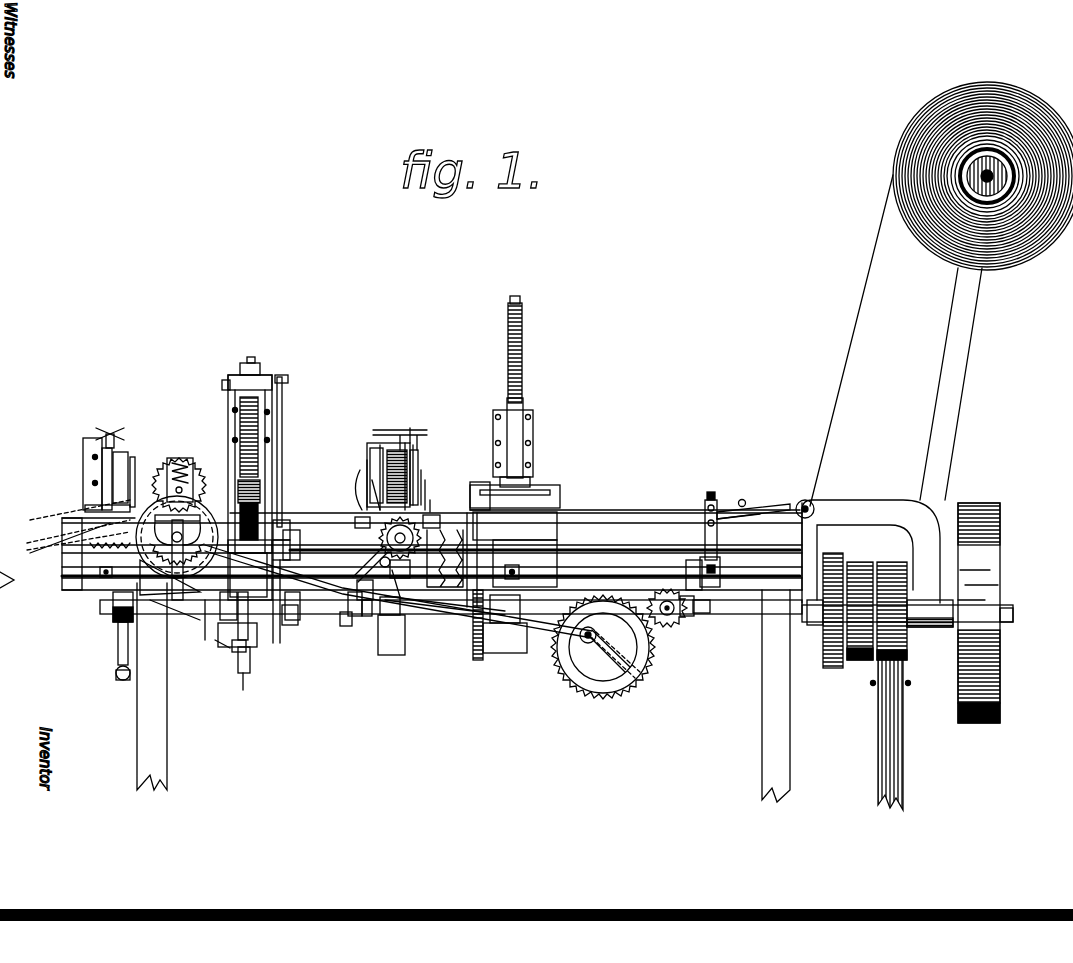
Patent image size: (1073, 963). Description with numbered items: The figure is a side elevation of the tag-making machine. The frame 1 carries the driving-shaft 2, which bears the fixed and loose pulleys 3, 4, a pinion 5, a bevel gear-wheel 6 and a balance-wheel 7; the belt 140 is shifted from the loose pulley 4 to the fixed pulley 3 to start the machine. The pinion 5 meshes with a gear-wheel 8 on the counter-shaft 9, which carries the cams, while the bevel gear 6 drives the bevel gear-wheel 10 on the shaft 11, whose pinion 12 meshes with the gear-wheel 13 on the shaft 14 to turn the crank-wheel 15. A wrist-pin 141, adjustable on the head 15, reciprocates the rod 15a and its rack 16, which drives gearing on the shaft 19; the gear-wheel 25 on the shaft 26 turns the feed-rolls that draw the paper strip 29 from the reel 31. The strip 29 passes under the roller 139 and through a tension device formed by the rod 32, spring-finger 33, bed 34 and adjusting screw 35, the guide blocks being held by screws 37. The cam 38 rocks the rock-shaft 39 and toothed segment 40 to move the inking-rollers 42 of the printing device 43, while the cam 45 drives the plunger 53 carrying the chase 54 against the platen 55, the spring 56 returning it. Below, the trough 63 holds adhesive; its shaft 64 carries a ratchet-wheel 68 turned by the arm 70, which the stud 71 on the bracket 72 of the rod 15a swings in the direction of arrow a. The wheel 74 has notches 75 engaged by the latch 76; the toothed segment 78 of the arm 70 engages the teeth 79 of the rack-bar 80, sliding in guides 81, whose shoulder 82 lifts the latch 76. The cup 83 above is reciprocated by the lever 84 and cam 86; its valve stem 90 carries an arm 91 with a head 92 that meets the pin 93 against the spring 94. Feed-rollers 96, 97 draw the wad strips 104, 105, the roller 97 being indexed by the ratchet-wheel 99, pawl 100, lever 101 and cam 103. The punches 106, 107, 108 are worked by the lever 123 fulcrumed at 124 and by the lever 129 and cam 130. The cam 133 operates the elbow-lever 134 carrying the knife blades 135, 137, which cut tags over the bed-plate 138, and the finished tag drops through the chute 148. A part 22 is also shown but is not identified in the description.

The frame 1 is at (868, 497).
The driving-shaft 2 is at (766, 622).
The fixed pulley 3 is at (860, 623).
The loose pulley 4 is at (906, 640).
The pinion 5 is at (826, 618).
The bevel gear-wheel 6 is at (700, 615).
The balance-wheel 7 is at (984, 613).
The gear-wheel 8 is at (838, 668).
The counter-shaft 9 is at (113, 610).
The bevel gear-wheel 10 is at (685, 620).
The shaft 11 is at (666, 590).
The pinion 12 is at (672, 630).
The gear-wheel 13 is at (640, 660).
The shaft 14 is at (602, 683).
The crank-wheel 15 is at (628, 694).
The rod 15a is at (420, 622).
The rack 16 is at (105, 572).
The shaft 19 is at (130, 588).
The lever 22 is at (125, 582).
The gear-wheel 25 is at (165, 468).
The shaft 26 is at (192, 486).
The strip 29 is at (860, 352).
The reel 31 is at (983, 188).
The rod 32 is at (705, 510).
The spring-finger 33 is at (732, 510).
The rod or bed 34 is at (722, 522).
The screw 35 is at (746, 502).
The screws 37 is at (712, 492).
The cam 38 is at (470, 632).
The rock-shaft 39 is at (518, 653).
The toothed segment 40 is at (500, 660).
The inking-rollers 42 is at (556, 532).
The printing device 43 is at (538, 468).
The cam 45 is at (478, 660).
The plunger 53 is at (522, 402).
The chase 54 is at (560, 492).
The platen 55 is at (474, 482).
The spring 56 is at (522, 352).
The trough 63 is at (393, 660).
The shaft 64 is at (362, 612).
The ratchet-wheel 68 is at (320, 520).
The arm 70 is at (342, 622).
The stud 71 is at (352, 640).
The bracket 72 is at (366, 650).
The head or wheel 74 is at (372, 480).
The notches 75 is at (365, 470).
The latch 76 is at (416, 470).
The toothed segment 78 is at (430, 500).
The teeth 79 is at (425, 480).
The rack-bar 80 is at (440, 518).
The guides 81 is at (444, 556).
The raised shoulder 82 is at (420, 450).
The cup 83 is at (385, 450).
The lever 84 is at (395, 680).
The cam 86 is at (390, 652).
The stem 90 is at (408, 430).
The arm 91 is at (405, 445).
The head 92 is at (395, 440).
The pin 93 is at (380, 440).
The spring 94 is at (420, 430).
The feed-roller 96 is at (244, 492).
The feed-roller 97 is at (222, 625).
The ratchet-wheel 99 is at (292, 550).
The dog or pawl 100 is at (284, 512).
The lever 101 is at (290, 630).
The cam 103 is at (300, 628).
The strip 104 is at (208, 640).
The strip 105 is at (228, 650).
The punch 106 is at (262, 400).
The punch 107 is at (243, 672).
The punch 108 is at (253, 357).
The lever 123 is at (236, 375).
The fulcrum 124 is at (222, 385).
The lever 129 is at (243, 692).
The cam 130 is at (236, 655).
The cam 133 is at (118, 642).
The elbow-lever 134 is at (114, 675).
The knife blade 135 is at (120, 440).
The knife blade 137 is at (88, 455).
The bed-plate 138 is at (138, 468).
The roller 139 is at (804, 499).
The belt 140 is at (892, 770).
The wrist-pin 141 is at (585, 645).
The chute 148 is at (58, 528).
The arrow a is at (400, 450).